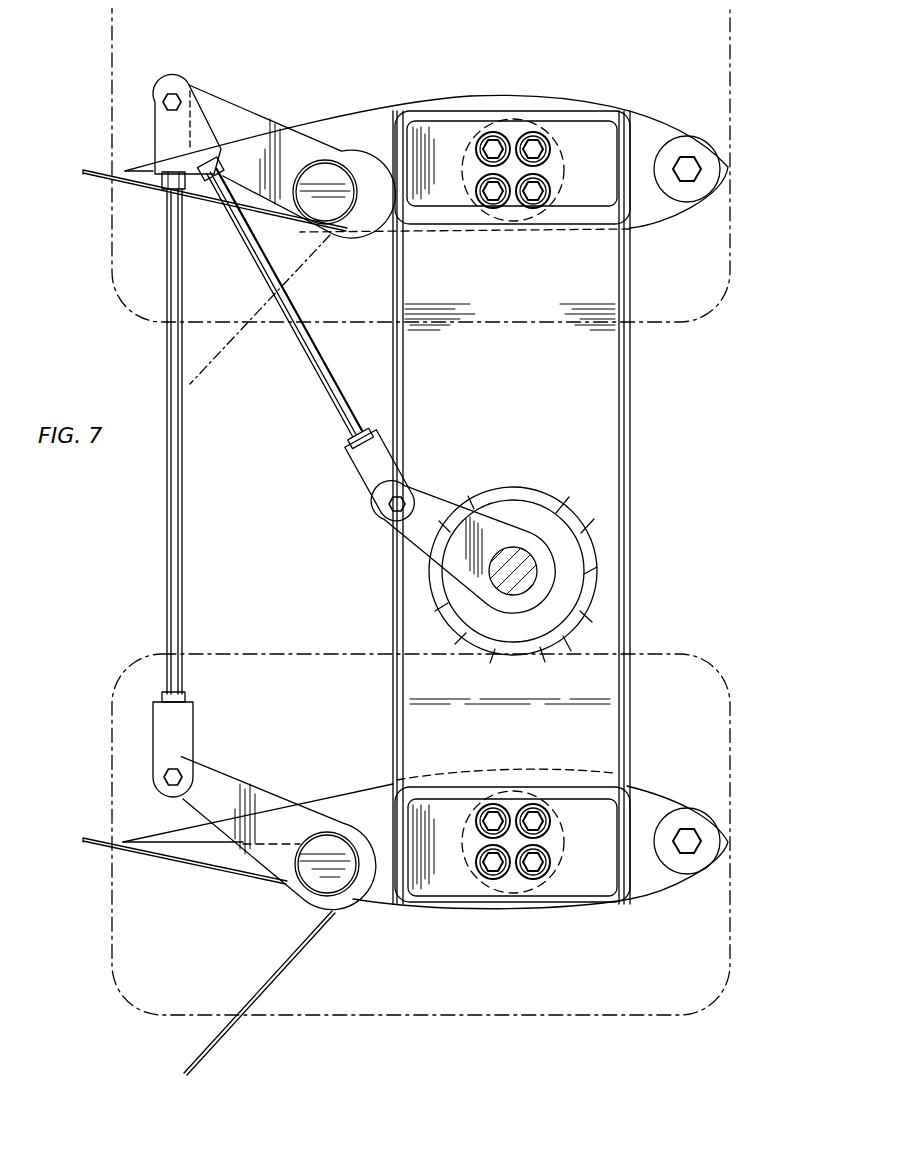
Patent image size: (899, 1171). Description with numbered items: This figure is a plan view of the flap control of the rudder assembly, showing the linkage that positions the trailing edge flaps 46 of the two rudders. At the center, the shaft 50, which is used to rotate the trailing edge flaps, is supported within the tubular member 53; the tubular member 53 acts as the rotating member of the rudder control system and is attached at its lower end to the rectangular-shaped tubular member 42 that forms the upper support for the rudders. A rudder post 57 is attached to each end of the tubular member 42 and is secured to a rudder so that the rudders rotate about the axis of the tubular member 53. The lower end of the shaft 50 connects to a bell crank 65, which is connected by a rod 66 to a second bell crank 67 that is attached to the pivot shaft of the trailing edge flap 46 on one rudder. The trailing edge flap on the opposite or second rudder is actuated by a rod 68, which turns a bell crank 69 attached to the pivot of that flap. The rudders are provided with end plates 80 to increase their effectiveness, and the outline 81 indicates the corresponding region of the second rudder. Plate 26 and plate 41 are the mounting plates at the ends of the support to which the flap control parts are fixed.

The upper mounting plate 26 is at (645, 118).
The lower mounting plate 41 is at (668, 792).
The tubular member 42 is at (632, 405).
The trailing edge flap 46 is at (96, 178).
The shaft 50 is at (533, 572).
The tubular member 53 is at (537, 489).
The rudder post 57 is at (531, 212).
The bell crank 65 is at (433, 502).
The rod 66 is at (322, 390).
The bell crank 67 is at (232, 120).
The rod 68 is at (185, 530).
The bell crank 69 is at (245, 792).
The end plate 80 is at (716, 290).
The lower housing outline 81 is at (716, 695).